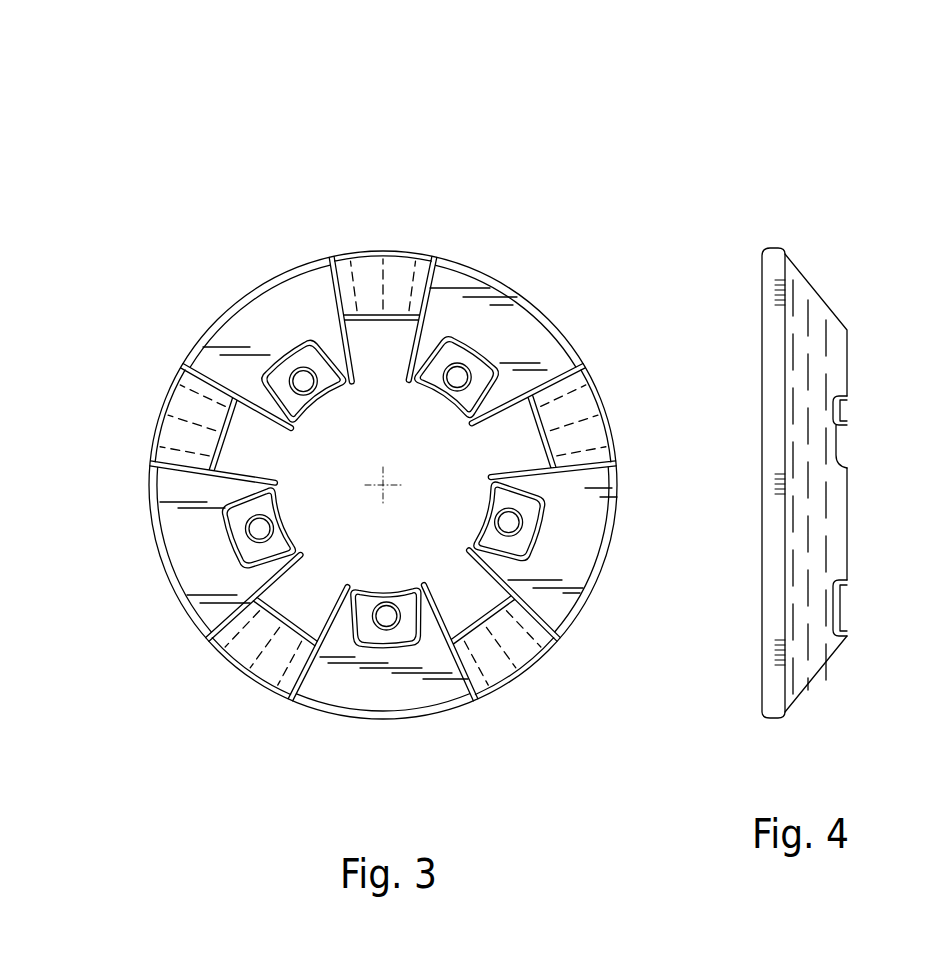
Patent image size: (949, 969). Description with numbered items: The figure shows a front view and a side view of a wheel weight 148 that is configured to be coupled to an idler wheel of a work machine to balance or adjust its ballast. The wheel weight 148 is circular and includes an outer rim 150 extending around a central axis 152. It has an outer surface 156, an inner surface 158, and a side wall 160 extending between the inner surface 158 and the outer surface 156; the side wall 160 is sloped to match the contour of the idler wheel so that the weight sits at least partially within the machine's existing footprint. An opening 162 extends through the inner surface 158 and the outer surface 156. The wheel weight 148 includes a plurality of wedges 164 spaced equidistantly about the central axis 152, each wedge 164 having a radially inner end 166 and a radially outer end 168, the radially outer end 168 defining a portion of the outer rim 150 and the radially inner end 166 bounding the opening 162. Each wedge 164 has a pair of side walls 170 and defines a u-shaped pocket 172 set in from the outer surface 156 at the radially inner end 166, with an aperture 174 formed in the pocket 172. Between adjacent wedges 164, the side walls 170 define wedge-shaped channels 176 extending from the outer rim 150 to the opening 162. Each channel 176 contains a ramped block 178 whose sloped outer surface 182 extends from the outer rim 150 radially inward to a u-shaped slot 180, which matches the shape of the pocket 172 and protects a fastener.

In FIG. 3, the wheel weight 148 is at (266, 155).
In FIG. 4, the wheel weight 148 is at (783, 175).
In FIG. 3, the outer rim 150 is at (392, 720).
In FIG. 3, the central axis 152 is at (372, 478).
In FIG. 3, the outer surface 156 is at (266, 316).
In FIG. 4, the outer surface 156 is at (746, 530).
In FIG. 4, the inner surface 158 is at (862, 567).
In FIG. 4, the side wall 160 is at (818, 318).
In FIG. 3, the opening 162 is at (376, 388).
In FIG. 3, the wedge 164 is at (532, 345).
In FIG. 3, the radially inner end 166 is at (482, 555).
In FIG. 3, the radially outer end 168 is at (553, 605).
In FIG. 3, the side walls 170 is at (423, 258).
In FIG. 3, the pocket 172 is at (484, 496).
In FIG. 3, the aperture 174 is at (463, 362).
In FIG. 3, the channel 176 is at (248, 433).
In FIG. 3, the ramped block 178 is at (293, 677).
In FIG. 3, the slot 180 is at (308, 580).
In FIG. 3, the sloped outer surface 182 is at (246, 648).